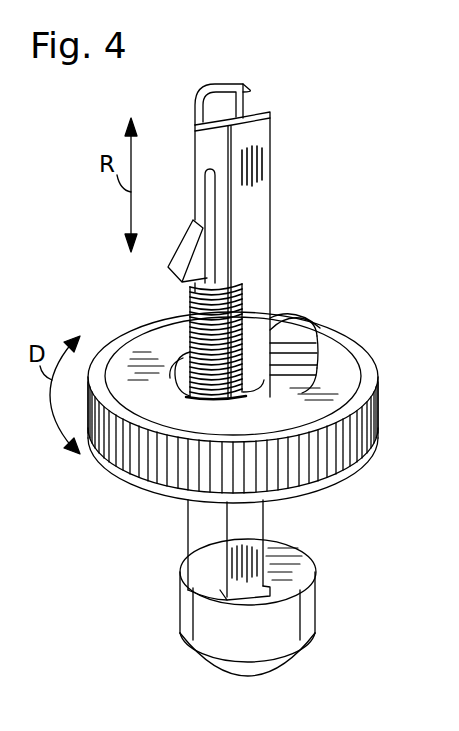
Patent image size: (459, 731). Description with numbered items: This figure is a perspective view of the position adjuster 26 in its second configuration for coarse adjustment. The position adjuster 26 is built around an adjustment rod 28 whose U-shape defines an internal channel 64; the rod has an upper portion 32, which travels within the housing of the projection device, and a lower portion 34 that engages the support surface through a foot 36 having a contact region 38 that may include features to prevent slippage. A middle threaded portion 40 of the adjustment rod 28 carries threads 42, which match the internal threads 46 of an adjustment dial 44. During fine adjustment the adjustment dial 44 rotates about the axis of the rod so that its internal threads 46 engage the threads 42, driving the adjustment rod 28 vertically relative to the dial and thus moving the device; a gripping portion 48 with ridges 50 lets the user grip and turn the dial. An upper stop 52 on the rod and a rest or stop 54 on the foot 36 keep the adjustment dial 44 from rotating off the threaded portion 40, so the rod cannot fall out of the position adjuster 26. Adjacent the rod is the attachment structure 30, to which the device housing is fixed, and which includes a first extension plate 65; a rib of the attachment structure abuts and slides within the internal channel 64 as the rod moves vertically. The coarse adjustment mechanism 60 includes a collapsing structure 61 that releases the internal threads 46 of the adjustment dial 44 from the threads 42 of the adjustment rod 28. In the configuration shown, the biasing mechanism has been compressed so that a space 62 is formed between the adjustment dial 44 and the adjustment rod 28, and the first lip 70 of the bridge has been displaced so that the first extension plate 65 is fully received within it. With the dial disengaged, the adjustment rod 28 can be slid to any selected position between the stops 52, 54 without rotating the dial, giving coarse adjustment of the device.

The position adjuster 26 is at (343, 123).
The adjustment rod 28 is at (196, 132).
The attachment structure 30 is at (312, 375).
The upper portion of adjustment rod 32 is at (272, 196).
The lower portion of adjustment rod 34 is at (188, 530).
The foot 36 is at (180, 620).
The contact region 38 is at (245, 670).
The threaded portion 40 is at (190, 302).
The threads 42 is at (198, 342).
The adjustment dial 44 is at (378, 409).
The internal threads 46 is at (178, 362).
The gripping portion 48 is at (363, 443).
The ridges 50 is at (318, 468).
The upper stop 52 is at (182, 255).
The stop 54 is at (300, 582).
The coarse adjustment mechanism 60 is at (313, 318).
The collapsing structure 61 is at (319, 343).
The space 62 is at (182, 385).
The internal channel 64 is at (244, 105).
The first extension plate 65 is at (282, 330).
The first lip 70 is at (307, 380).